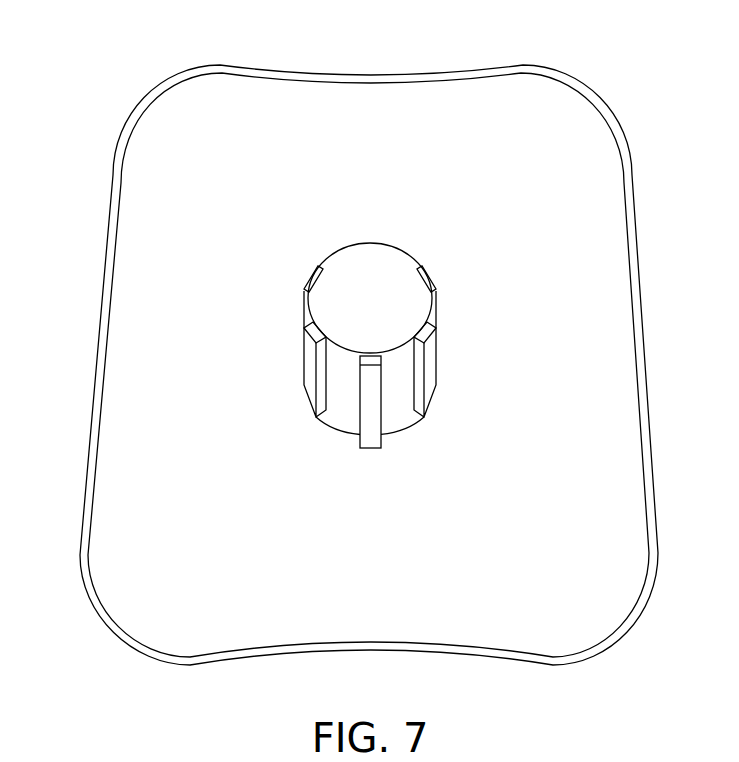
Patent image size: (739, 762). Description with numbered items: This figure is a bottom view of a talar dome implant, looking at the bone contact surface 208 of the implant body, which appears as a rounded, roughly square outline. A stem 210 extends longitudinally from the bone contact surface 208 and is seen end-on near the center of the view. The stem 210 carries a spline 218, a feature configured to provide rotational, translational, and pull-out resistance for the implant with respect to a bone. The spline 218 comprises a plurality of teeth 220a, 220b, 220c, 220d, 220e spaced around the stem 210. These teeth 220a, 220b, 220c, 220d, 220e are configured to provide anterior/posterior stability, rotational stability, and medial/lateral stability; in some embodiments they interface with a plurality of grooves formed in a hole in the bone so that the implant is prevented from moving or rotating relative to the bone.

The bone contact surface 208 is at (653, 462).
The stem 210 is at (385, 260).
The spline 218 is at (340, 403).
The tooth 220a is at (377, 448).
The tooth 220b is at (437, 360).
The tooth 220c is at (437, 293).
The tooth 220d is at (304, 285).
The tooth 220e is at (303, 387).